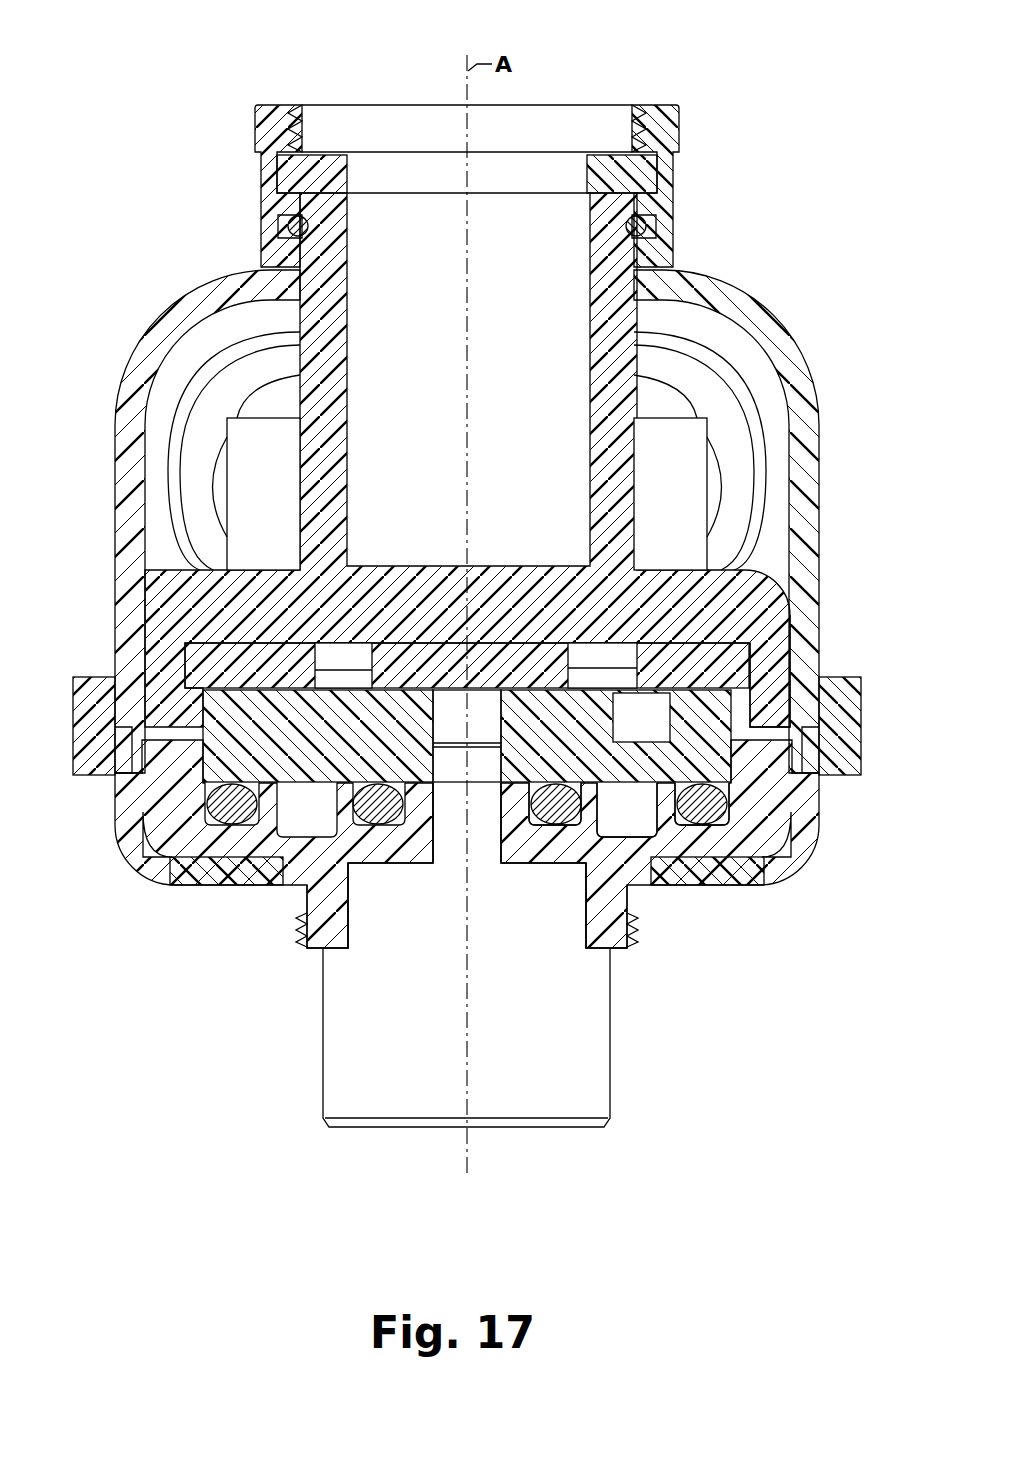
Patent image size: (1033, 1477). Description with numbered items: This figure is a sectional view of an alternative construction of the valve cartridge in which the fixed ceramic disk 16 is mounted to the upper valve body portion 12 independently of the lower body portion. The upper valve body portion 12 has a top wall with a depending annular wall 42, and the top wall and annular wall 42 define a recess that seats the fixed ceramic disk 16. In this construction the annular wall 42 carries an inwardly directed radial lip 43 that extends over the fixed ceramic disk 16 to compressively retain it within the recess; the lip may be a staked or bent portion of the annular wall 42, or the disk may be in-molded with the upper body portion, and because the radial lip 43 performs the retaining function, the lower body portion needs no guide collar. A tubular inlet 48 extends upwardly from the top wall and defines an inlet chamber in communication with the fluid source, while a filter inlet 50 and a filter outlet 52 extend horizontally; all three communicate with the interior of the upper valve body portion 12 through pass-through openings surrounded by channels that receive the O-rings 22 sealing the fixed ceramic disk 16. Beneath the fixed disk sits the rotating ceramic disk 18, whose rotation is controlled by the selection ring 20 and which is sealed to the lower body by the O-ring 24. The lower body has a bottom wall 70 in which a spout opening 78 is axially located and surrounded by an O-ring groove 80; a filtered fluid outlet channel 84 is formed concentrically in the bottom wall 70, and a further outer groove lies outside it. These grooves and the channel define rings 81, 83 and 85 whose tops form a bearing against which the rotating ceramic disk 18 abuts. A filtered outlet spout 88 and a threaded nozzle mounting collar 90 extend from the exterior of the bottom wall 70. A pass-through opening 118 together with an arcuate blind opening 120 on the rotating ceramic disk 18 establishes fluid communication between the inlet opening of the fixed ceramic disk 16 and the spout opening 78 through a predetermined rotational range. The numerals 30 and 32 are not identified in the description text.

The upper valve body portion 12 is at (170, 297).
The fixed ceramic disk 16 is at (185, 650).
The rotating ceramic disk 18 is at (218, 757).
The selection ring 20 is at (812, 705).
The O-rings 22 is at (178, 884).
The O-ring 24 is at (467, 880).
The lower body portion 30 is at (812, 855).
The cap nut 32 is at (684, 147).
The annular wall 42 is at (786, 590).
The radial lip 43 is at (792, 663).
The tubular inlet 48 is at (406, 302).
The filter inlet 50 is at (272, 411).
The filter outlet 52 is at (660, 411).
The bottom wall 70 is at (555, 865).
The spout opening 78 is at (433, 848).
The O-ring groove 80 is at (340, 790).
The ring 81 is at (623, 788).
The ring 83 is at (610, 800).
The filtered fluid outlet channel 84 is at (321, 821).
The ring 85 is at (650, 830).
The filtered outlet spout 88 is at (612, 1022).
The nozzle mounting collar 90 is at (297, 912).
The pass-through opening 118 is at (497, 760).
The arcuate blind opening 120 is at (493, 720).